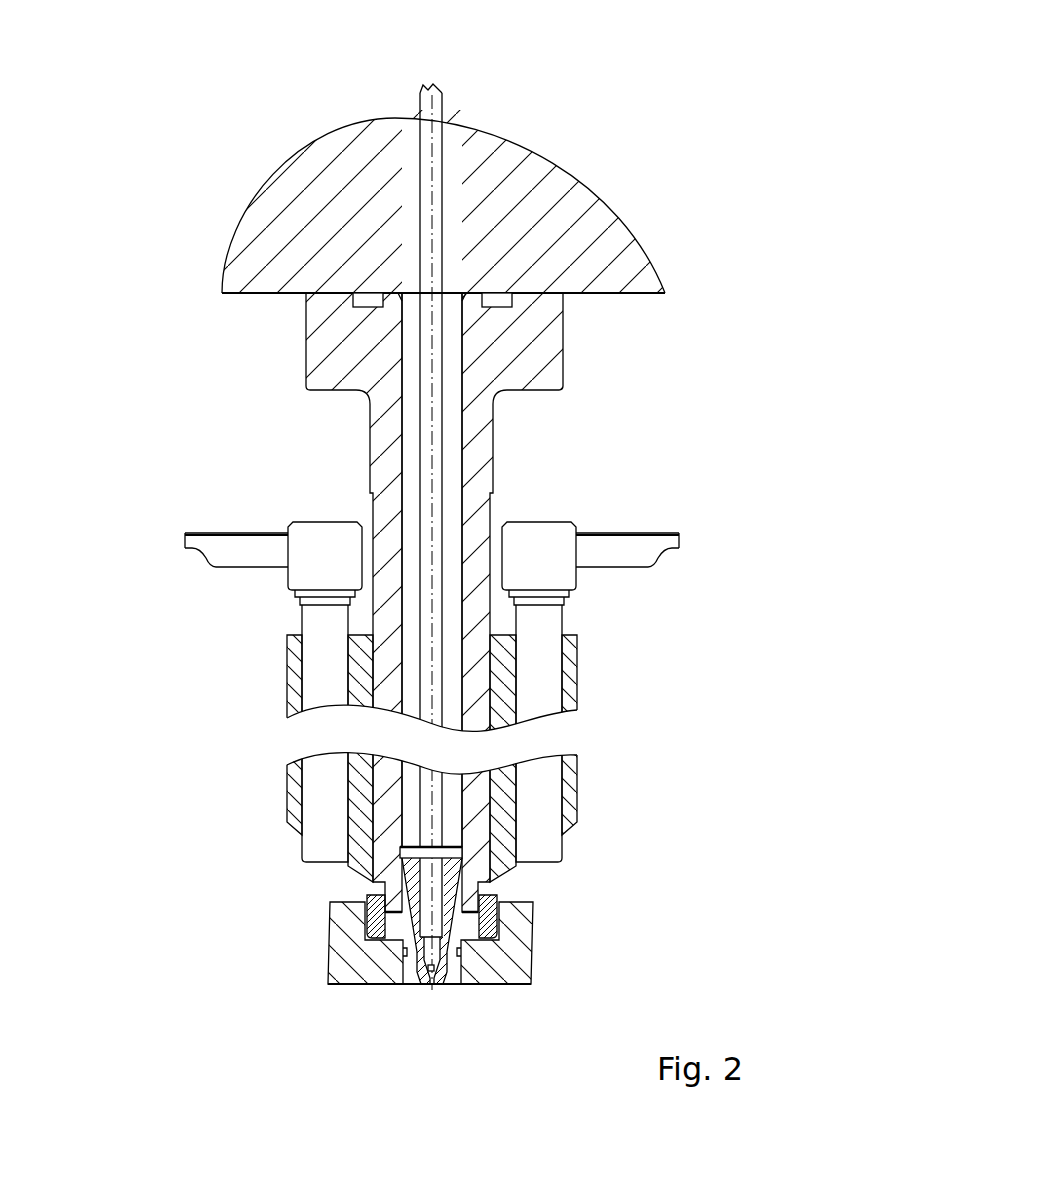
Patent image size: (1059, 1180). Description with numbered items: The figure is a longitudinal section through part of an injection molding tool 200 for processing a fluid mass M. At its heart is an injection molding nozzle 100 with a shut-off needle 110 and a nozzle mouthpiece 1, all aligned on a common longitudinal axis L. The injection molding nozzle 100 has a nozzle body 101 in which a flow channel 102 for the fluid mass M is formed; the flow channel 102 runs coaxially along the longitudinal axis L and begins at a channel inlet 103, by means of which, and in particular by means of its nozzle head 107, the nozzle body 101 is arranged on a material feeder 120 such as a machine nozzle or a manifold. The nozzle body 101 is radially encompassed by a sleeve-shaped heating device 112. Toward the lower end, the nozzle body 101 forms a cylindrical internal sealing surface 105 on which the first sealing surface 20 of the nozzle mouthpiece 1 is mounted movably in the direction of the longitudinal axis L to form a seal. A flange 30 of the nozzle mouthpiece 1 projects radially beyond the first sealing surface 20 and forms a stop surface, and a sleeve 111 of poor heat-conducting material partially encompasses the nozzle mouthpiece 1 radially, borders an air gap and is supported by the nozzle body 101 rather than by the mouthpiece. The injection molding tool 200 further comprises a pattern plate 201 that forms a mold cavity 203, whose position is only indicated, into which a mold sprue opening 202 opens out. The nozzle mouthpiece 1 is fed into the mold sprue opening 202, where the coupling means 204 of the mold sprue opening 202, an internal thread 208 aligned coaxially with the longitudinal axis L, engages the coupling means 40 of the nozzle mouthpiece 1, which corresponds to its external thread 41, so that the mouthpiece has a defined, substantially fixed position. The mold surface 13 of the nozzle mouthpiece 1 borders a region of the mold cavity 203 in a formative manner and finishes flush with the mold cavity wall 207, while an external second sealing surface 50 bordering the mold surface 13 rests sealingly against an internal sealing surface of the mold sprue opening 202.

The injection molding tool 200 is at (163, 135).
The material feeder 120 is at (342, 192).
The shut-off needle 110 is at (427, 107).
The fluid mass M is at (453, 155).
The longitudinal axis L is at (436, 203).
The nozzle head 107 is at (407, 602).
The channel inlet 103 is at (412, 296).
The flow channel 102 is at (276, 570).
The injection molding nozzle 100 is at (308, 602).
The nozzle body 101 is at (376, 463).
The sleeve-shaped heating device 112 is at (326, 672).
The first sealing surface 20 is at (354, 965).
The internal sealing surface 105 is at (354, 965).
The sleeve 111 is at (370, 923).
The flange 30 is at (396, 970).
The nozzle mouthpiece 1 is at (404, 958).
The mold cavity wall 207 is at (408, 1033).
The mold surface 13 is at (416, 986).
The mold cavity 203 is at (382, 986).
The second sealing surface 50 is at (457, 981).
The coupling means 40 is at (562, 989).
The external thread 41 is at (562, 989).
The coupling means 204 is at (562, 989).
The internal thread 208 is at (456, 960).
The pattern plate 201 is at (503, 992).
The mold sprue opening 202 is at (503, 992).